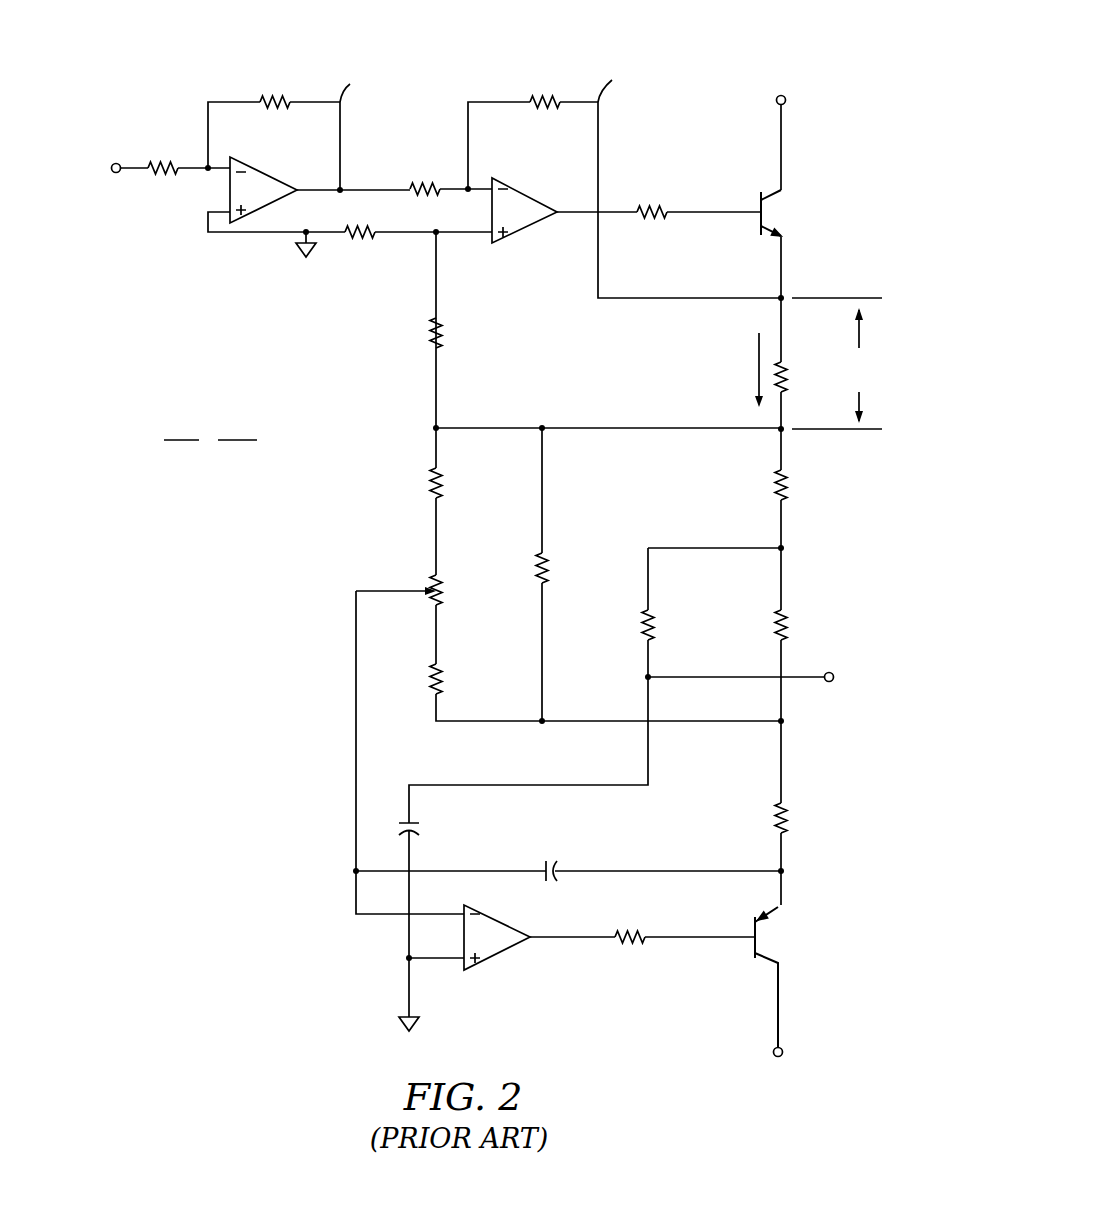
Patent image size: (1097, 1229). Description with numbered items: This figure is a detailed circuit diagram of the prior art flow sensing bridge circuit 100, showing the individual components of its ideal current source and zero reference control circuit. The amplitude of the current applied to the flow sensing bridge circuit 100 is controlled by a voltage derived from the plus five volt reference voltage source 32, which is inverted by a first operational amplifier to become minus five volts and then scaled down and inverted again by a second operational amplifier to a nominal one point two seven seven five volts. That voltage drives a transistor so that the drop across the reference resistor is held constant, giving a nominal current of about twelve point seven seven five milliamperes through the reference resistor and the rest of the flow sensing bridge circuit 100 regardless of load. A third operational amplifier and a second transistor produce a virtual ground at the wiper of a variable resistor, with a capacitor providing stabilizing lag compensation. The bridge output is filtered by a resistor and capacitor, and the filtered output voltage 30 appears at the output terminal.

The flow sensing bridge circuit 100 is at (160, 92).
The reference voltage source 32 is at (69, 211).
The filtered output voltage 30 is at (840, 582).